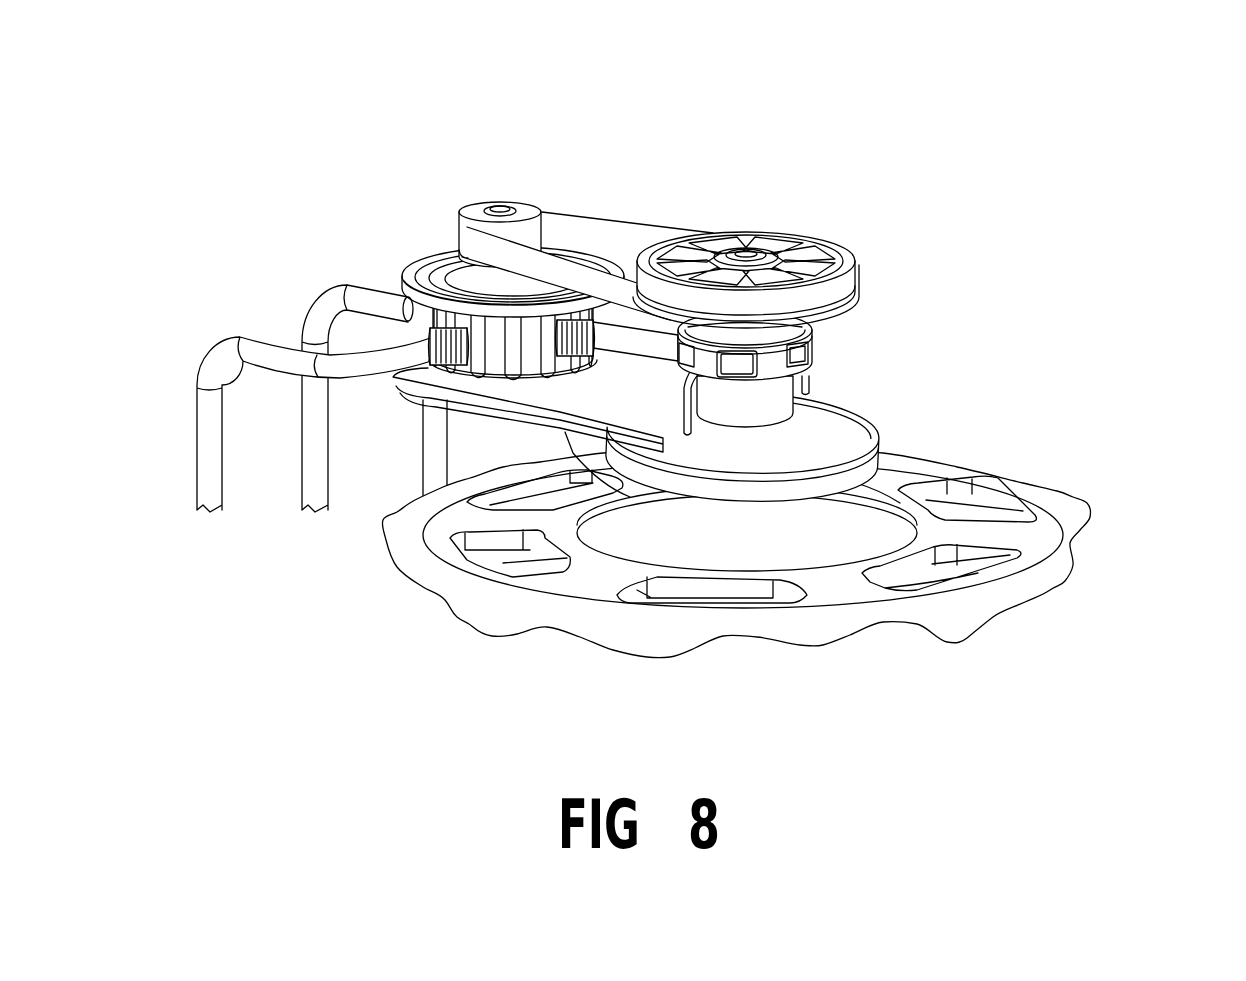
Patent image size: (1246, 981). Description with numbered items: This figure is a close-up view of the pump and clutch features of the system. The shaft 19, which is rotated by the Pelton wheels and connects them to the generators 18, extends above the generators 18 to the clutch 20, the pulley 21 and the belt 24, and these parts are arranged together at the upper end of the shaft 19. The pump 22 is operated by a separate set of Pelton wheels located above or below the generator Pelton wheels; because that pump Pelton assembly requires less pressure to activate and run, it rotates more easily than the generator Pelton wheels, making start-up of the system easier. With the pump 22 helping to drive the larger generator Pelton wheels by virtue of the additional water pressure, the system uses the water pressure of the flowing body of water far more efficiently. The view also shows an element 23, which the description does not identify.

The generators 18 is at (1040, 518).
The shaft 19 is at (775, 400).
The clutch 20 is at (813, 333).
The pulley 21 is at (777, 257).
The pump 22 is at (420, 250).
The fluid tubes 23 is at (327, 287).
The belt 24 is at (607, 208).